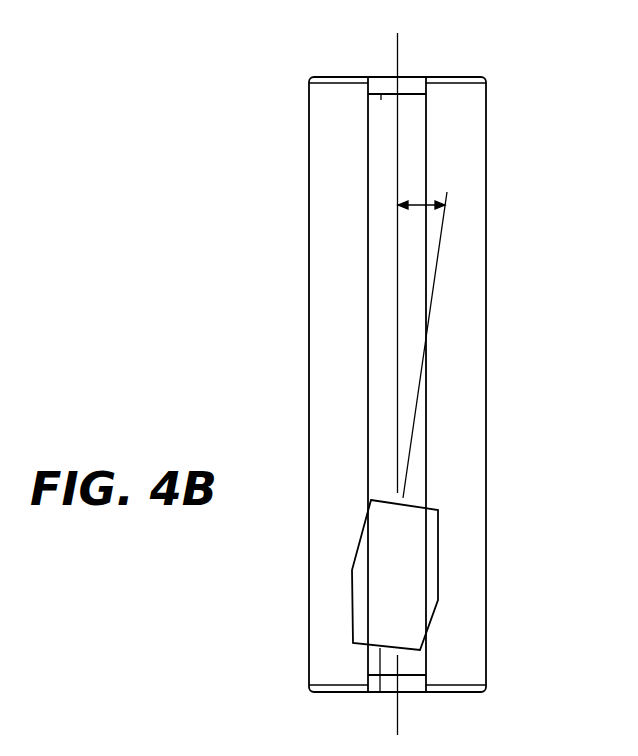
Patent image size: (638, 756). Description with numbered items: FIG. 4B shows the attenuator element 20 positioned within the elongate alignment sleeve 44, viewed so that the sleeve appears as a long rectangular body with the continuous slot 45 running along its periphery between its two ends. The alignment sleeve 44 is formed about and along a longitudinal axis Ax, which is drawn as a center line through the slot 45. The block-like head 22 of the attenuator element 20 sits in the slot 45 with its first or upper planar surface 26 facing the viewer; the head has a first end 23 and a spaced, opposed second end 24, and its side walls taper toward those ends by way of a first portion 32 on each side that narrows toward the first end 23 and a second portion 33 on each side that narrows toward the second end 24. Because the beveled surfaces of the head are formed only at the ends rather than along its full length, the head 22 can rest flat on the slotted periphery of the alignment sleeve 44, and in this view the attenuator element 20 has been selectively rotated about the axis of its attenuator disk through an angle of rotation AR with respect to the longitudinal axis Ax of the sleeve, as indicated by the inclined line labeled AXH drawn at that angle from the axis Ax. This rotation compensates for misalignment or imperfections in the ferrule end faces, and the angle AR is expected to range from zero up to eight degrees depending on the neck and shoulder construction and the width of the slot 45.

The alignment sleeve 44 is at (352, 270).
The first end of the head 23 is at (425, 487).
The first planar surface 26 is at (410, 586).
The attenuator element 20 is at (450, 572).
The first portion of the side wall 32 is at (360, 534).
The second portion of the side wall 33 is at (352, 604).
The head 22 is at (360, 630).
The slot 45 is at (381, 100).
The second end of the head 24 is at (380, 692).
The longitudinal axis Ax is at (398, 47).
The angle of rotation AR is at (422, 204).
The tilted axis AXH is at (414, 432).